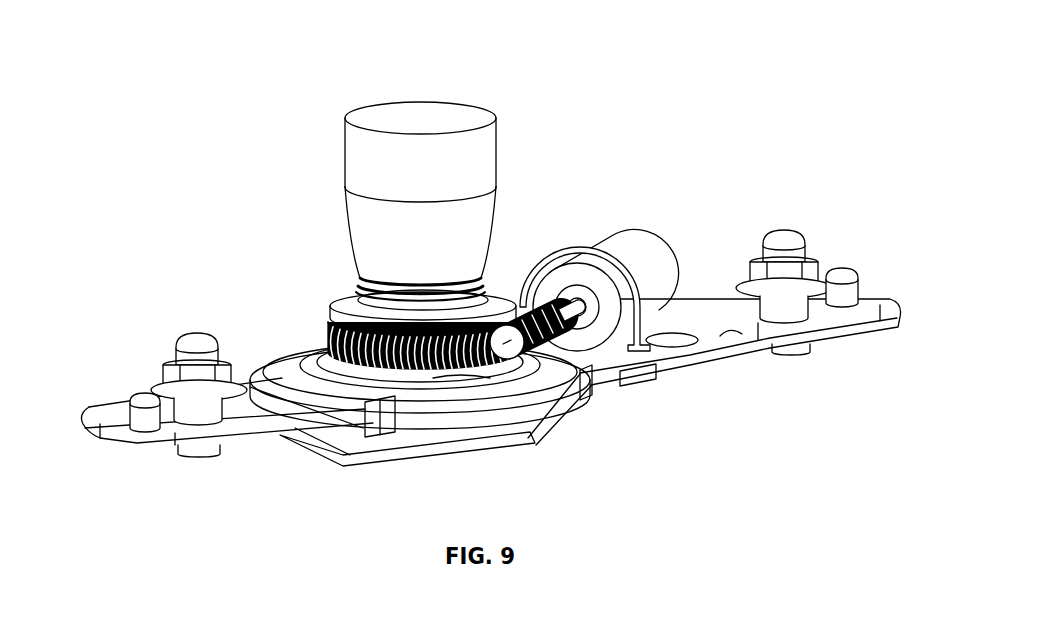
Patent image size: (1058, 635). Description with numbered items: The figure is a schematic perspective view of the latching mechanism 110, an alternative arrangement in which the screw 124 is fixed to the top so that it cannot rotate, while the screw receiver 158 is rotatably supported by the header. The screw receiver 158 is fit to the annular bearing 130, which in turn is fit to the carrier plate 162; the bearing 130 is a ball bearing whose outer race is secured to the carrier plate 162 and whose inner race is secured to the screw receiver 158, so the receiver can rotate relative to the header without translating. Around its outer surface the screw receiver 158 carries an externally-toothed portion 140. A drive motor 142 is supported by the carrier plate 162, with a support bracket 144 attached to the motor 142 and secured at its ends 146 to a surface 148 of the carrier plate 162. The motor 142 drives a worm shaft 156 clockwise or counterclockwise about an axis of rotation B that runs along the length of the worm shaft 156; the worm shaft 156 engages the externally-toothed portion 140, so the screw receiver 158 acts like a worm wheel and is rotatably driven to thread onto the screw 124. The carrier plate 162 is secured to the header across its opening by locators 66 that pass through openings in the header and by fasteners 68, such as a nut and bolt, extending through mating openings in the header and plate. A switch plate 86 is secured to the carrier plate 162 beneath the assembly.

The latching mechanism 110 is at (663, 59).
The screw 124 is at (497, 143).
The screw receiver 158 is at (356, 293).
The externally-toothed portion 140 is at (338, 338).
The annular bearing 130 is at (322, 366).
The fasteners 68 is at (178, 364).
The locators 66 is at (143, 397).
The switch plate 86 is at (345, 466).
The axis of rotation B is at (440, 378).
The worm shaft 156 is at (600, 370).
The carrier plate 162 is at (720, 331).
The ends 146 is at (670, 338).
The surface 148 is at (706, 328).
The drive motor 142 is at (630, 227).
The support bracket 144 is at (588, 244).